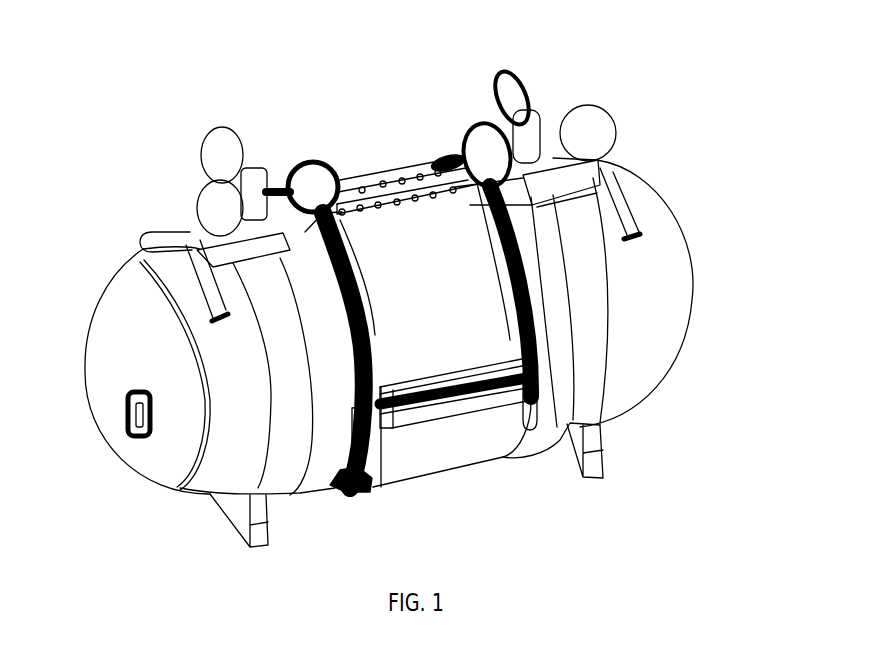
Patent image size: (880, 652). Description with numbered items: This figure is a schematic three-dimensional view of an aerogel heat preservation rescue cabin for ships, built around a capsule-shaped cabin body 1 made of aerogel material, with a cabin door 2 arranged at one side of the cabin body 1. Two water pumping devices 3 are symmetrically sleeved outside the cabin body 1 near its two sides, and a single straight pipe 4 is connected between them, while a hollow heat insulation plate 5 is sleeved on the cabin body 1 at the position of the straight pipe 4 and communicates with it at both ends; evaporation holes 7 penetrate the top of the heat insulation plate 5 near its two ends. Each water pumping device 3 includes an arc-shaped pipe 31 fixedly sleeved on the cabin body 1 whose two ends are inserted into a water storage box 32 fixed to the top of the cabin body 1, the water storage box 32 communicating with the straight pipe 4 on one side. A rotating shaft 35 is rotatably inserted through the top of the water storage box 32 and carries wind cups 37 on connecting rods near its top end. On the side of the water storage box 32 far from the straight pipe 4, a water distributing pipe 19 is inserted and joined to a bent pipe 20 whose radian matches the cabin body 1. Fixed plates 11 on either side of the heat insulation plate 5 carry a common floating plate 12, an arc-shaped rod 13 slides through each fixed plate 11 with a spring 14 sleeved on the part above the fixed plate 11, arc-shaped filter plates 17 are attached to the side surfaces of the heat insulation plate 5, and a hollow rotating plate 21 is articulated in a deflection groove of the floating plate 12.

The cabin body 1 is at (683, 297).
The cabin door 2 is at (92, 358).
The water pumping device 3 is at (580, 82).
The straight pipe 4 is at (417, 178).
The heat insulation plate 5 is at (493, 453).
The evaporation hole 7 is at (375, 203).
The fixed plate 11 is at (347, 403).
The floating plate 12 is at (470, 373).
The arc-shaped rod 13 is at (540, 403).
The spring 14 is at (537, 293).
The filter plate 17 is at (365, 485).
The water distributing pipe 19 is at (193, 237).
The bent pipe 20 is at (615, 183).
The rotating plate 21 is at (403, 427).
The arc-shaped pipe 31 is at (307, 500).
The water storage box 32 is at (508, 165).
The rotating shaft 35 is at (258, 167).
The wind cup 37 is at (210, 147).